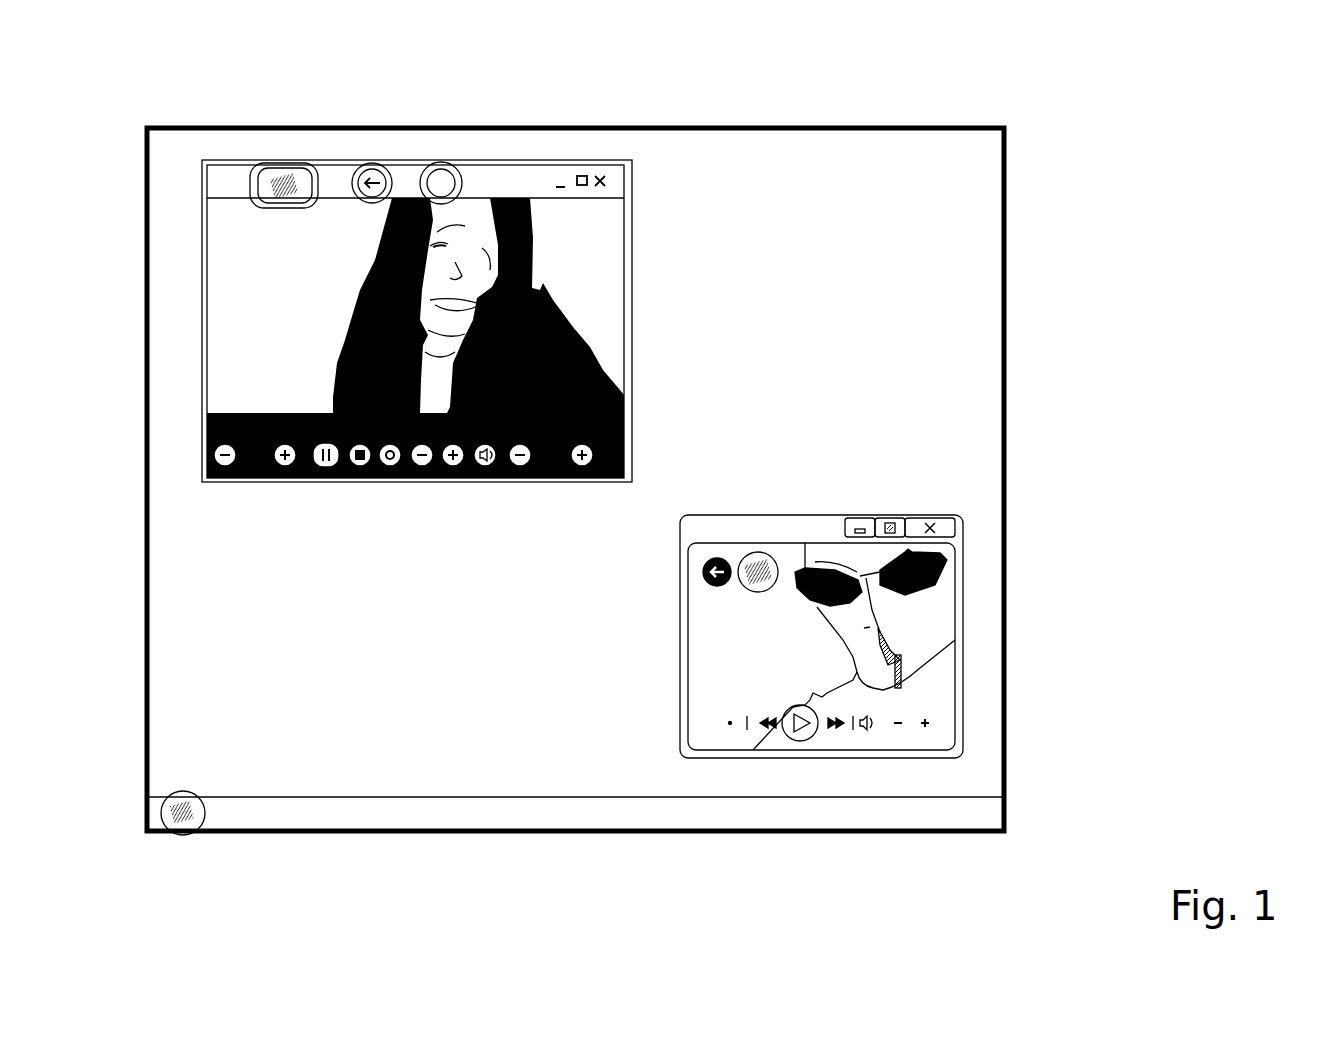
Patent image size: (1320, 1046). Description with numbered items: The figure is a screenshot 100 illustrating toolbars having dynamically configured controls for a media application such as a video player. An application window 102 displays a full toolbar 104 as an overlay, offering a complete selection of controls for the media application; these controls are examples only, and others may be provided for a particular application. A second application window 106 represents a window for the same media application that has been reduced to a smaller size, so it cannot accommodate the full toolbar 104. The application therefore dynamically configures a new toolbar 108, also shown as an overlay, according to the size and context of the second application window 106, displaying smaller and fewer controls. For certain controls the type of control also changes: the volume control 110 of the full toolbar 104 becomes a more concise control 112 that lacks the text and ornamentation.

The screenshot 100 is at (144, 215).
The application window 102 is at (222, 158).
The full toolbar 104 is at (242, 481).
The second application window 106 is at (840, 693).
The new toolbar 108 is at (718, 733).
The volume control 110 is at (568, 479).
The more concise control 112 is at (915, 738).